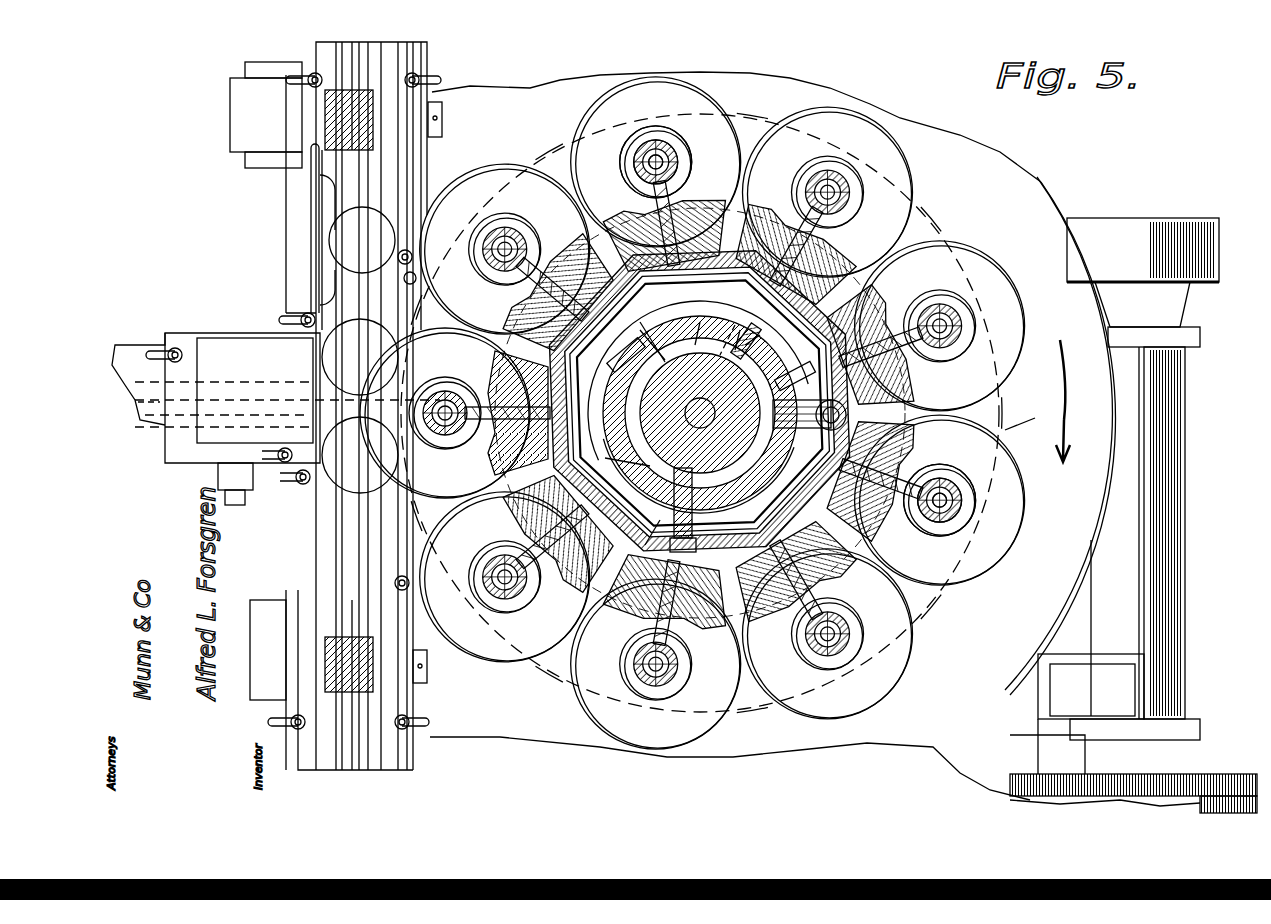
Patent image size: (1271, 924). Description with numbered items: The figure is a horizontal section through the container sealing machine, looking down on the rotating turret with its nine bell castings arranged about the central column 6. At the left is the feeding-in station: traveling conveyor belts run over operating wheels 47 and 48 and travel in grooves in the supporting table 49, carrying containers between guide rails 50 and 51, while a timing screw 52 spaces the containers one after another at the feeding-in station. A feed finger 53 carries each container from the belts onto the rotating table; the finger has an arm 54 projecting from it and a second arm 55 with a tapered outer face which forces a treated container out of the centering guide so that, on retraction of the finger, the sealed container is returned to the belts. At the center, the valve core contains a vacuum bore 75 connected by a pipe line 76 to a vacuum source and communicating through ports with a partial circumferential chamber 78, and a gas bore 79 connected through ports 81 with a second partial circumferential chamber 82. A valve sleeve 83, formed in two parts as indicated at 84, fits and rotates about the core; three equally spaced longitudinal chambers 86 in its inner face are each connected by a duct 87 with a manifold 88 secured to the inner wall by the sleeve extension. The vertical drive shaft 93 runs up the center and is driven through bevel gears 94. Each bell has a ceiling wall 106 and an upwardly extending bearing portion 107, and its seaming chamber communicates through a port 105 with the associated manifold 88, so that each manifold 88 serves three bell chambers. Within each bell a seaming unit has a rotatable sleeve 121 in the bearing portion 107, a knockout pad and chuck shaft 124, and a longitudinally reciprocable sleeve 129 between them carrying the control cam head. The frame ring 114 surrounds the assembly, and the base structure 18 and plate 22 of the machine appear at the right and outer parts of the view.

The column 6 is at (430, 357).
The base frame 18 is at (1210, 782).
The rotating turret plate 22 is at (1026, 411).
The operating wheel 47 is at (390, 118).
The operating wheel 48 is at (440, 110).
The supporting table 49 is at (332, 305).
The guide rail 50 is at (330, 103).
The guide rail 51 is at (400, 158).
The timing screw 52 is at (320, 233).
The feed finger 53 is at (379, 357).
The arm 54 is at (276, 531).
The arm 55 is at (426, 413).
The vacuum bore 75 is at (704, 345).
The pipe line 76 is at (644, 524).
The partial circumferential chamber 78 is at (758, 328).
The gas bore 79 is at (809, 437).
The port 81 is at (670, 400).
The partial circumferential chamber 82 is at (704, 476).
The valve sleeve 83 is at (641, 337).
The two-part joint of valve sleeve 84 is at (679, 323).
The longitudinal chamber 86 is at (736, 430).
The duct 87 is at (699, 444).
The manifold 88 is at (699, 401).
The drive shaft 93 is at (660, 395).
The bevel gears 94 is at (650, 418).
The port 105 is at (825, 238).
The ceiling wall 106 is at (722, 428).
The bearing portion 107 is at (660, 125).
The frame ring 114 is at (758, 436).
The sleeve 121 is at (636, 172).
The chuck shaft 124 is at (640, 150).
The sleeve 129 is at (668, 160).